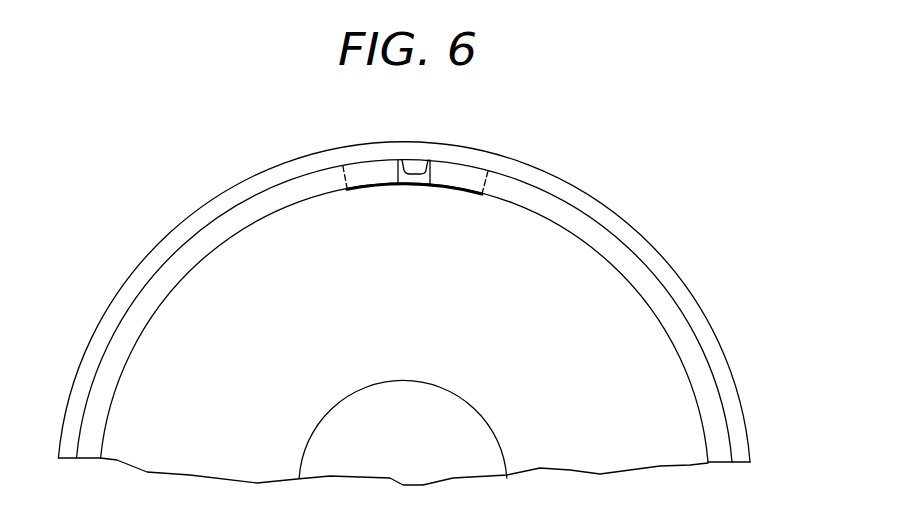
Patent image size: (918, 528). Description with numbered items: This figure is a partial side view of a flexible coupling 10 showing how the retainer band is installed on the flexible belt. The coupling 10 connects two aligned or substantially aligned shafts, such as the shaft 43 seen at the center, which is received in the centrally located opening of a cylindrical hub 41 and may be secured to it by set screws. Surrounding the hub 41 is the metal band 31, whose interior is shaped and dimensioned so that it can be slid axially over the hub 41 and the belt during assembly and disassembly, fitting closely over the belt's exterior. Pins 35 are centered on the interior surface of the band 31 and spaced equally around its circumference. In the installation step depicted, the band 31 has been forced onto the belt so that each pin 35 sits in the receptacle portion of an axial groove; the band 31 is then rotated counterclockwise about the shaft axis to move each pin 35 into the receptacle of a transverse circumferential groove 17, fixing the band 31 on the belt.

The flexible coupling 10 is at (611, 193).
The metal band 31 is at (470, 150).
The pin 35 is at (416, 165).
The transverse circumferential groove 17 is at (372, 186).
The hub 41 is at (603, 323).
The shaft 43 is at (480, 440).